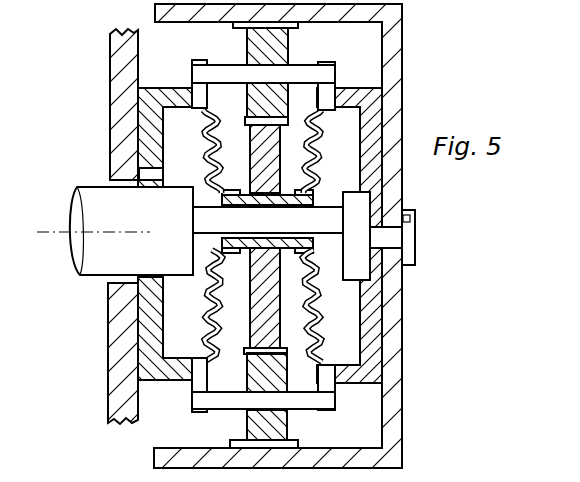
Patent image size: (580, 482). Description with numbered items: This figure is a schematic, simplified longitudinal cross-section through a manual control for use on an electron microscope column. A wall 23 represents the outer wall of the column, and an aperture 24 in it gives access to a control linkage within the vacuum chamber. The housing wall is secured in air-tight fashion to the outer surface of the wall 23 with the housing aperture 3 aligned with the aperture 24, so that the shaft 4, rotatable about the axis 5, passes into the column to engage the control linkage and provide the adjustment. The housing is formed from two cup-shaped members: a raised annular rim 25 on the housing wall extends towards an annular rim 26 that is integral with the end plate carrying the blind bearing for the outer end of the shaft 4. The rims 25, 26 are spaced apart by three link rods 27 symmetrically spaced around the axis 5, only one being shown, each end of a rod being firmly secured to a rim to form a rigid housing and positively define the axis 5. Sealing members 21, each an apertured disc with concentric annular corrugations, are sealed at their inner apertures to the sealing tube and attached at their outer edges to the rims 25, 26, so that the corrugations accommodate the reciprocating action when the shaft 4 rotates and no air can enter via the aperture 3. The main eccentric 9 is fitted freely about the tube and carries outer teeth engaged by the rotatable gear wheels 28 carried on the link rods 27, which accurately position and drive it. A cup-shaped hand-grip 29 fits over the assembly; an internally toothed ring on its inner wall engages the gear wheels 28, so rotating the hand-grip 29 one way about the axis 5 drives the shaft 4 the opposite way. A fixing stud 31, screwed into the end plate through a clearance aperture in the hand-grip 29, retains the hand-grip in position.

The aperture 3 is at (147, 172).
The shaft 4 is at (113, 255).
The axis 5 is at (47, 243).
The main eccentric 9 is at (262, 145).
The sealing members 21 is at (203, 125).
The wall 23 is at (118, 62).
The aperture 24 is at (117, 298).
The annular rim 25 is at (167, 372).
The annular rim 26 is at (353, 375).
The link rods 27 is at (217, 70).
The gear-wheel 28 is at (276, 44).
The hand-grip 29 is at (390, 38).
The fixing stud 31 is at (414, 232).